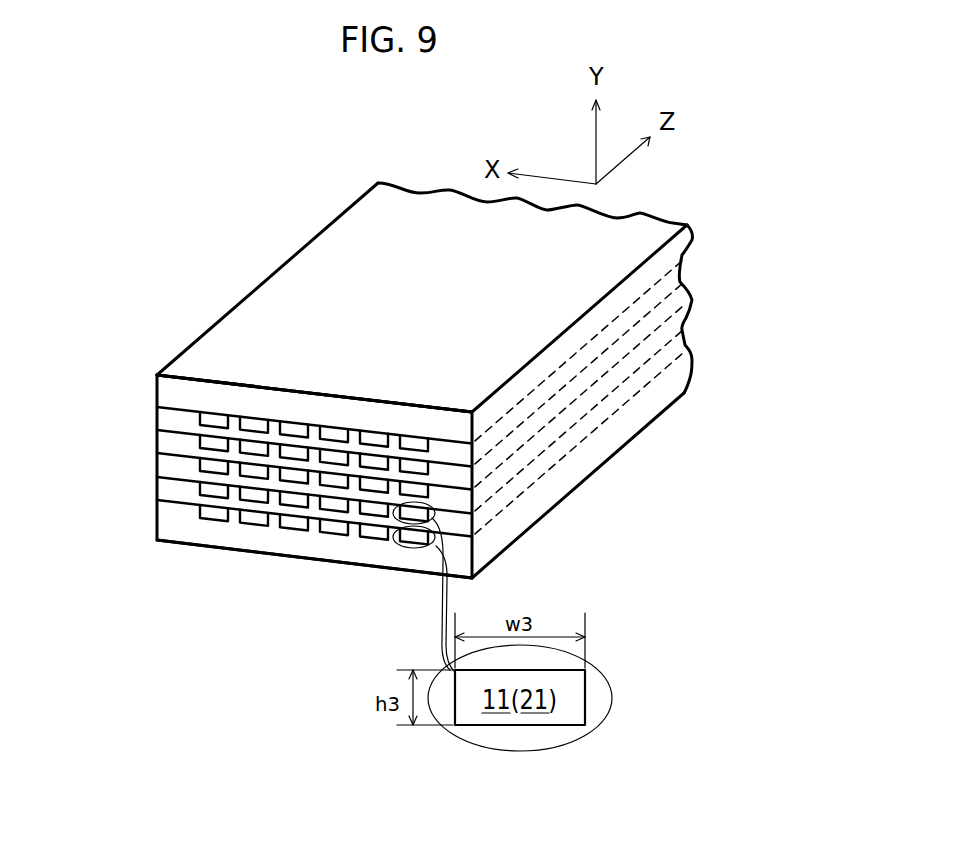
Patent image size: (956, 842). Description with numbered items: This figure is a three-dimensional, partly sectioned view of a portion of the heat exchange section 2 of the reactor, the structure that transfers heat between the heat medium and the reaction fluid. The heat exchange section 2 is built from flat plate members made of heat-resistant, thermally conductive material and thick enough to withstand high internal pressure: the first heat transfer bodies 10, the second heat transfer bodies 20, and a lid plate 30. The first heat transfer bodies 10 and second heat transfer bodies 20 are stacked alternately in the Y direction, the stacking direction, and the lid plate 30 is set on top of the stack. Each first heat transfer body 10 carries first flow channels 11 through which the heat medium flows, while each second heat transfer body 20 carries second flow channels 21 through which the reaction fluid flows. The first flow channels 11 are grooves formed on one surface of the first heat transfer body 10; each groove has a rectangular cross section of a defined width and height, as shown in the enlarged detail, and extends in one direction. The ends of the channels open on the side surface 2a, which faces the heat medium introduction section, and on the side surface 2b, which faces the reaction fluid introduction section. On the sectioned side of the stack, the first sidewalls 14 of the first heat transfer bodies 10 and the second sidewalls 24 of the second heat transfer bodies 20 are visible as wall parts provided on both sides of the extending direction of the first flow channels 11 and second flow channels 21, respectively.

The heat exchange section 2 is at (307, 236).
The side surface 2a is at (207, 397).
The side surface 2b is at (314, 393).
The lid plate 30 is at (163, 388).
The second heat transfer body 20 is at (162, 470).
The first heat transfer body 10 is at (162, 442).
The first flow channel 11 is at (214, 414).
The second flow channel 21 is at (414, 514).
The first sidewall 14 is at (523, 412).
The second sidewall 24 is at (563, 398).